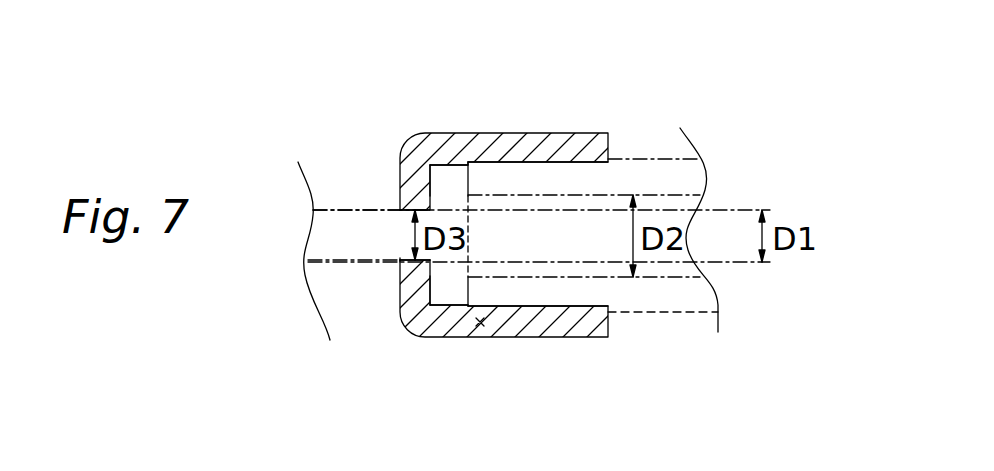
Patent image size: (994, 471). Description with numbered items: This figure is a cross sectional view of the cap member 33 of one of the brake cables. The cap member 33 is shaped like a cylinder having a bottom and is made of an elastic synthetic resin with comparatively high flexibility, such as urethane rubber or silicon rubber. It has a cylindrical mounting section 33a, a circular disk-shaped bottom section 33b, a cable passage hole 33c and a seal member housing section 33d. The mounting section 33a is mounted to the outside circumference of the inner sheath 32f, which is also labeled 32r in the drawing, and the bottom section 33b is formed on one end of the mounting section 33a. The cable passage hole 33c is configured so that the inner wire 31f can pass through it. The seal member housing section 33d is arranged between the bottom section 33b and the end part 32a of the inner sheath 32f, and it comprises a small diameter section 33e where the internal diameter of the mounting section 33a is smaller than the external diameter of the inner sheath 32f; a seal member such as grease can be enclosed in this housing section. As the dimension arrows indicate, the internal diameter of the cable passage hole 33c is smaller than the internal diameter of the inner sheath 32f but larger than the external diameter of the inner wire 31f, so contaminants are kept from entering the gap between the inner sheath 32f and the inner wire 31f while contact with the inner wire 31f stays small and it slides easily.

The inner wire 31f is at (323, 207).
The cap member 33 is at (545, 123).
The mounting section 33a is at (580, 133).
The bottom section 33b is at (407, 191).
The cable passage hole 33c is at (405, 260).
The seal member housing section 33d is at (450, 190).
The small diameter section 33e is at (437, 305).
The end part of the inner sheath 32a is at (480, 322).
The inner sheath 32f is at (552, 278).
The shaft portion 32r is at (539, 236).